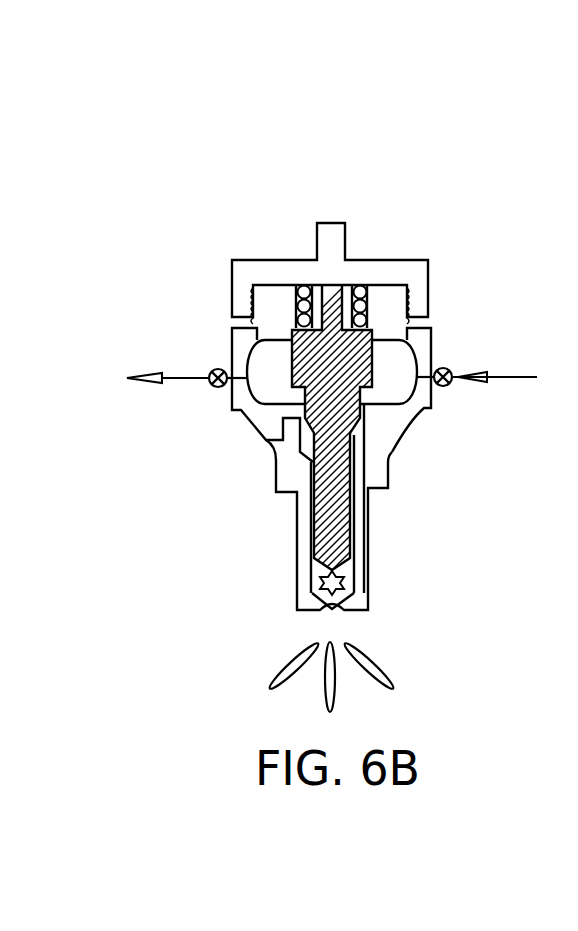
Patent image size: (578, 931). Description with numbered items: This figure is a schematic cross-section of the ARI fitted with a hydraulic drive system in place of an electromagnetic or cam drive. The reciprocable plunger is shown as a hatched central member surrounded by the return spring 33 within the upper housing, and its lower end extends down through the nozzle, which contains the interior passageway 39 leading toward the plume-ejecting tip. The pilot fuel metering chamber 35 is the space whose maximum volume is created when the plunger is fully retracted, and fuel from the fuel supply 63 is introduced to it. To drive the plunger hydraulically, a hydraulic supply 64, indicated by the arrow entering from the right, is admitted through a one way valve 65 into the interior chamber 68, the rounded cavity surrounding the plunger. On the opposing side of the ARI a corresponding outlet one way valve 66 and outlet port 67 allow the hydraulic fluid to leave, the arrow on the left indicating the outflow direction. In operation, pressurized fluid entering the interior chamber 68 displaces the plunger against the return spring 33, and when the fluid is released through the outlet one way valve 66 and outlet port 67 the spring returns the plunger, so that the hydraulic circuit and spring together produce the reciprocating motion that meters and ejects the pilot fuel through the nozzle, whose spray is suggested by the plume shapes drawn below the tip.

The return spring 33 is at (372, 292).
The pilot fuel metering chamber 35 is at (352, 433).
The interior passageway 39 is at (362, 524).
The fuel supply 63 is at (266, 442).
The hydraulic supply 64 is at (515, 381).
The one way valve 65 is at (445, 388).
The outlet one way valve 66 is at (220, 388).
The outlet port 67 is at (148, 381).
The interior chamber 68 is at (392, 367).